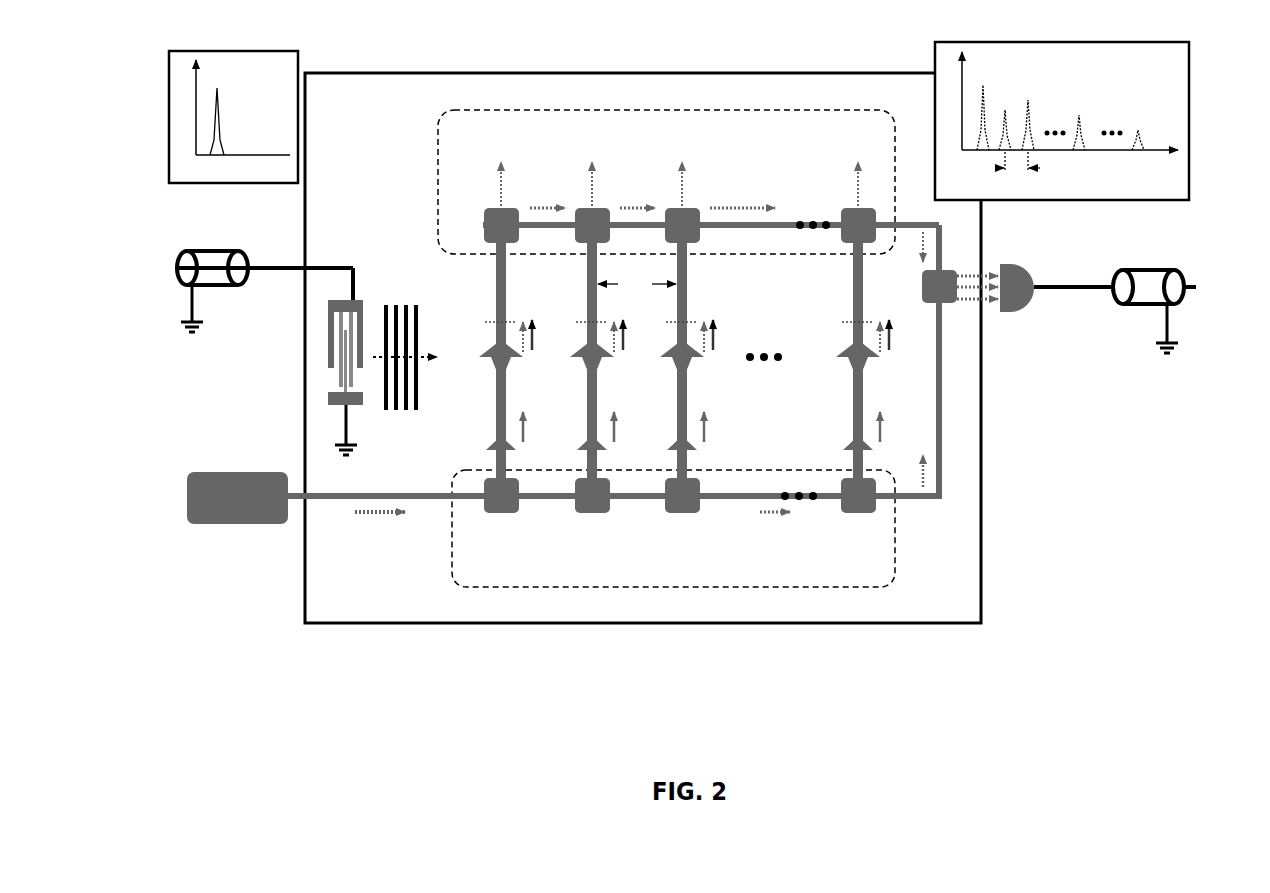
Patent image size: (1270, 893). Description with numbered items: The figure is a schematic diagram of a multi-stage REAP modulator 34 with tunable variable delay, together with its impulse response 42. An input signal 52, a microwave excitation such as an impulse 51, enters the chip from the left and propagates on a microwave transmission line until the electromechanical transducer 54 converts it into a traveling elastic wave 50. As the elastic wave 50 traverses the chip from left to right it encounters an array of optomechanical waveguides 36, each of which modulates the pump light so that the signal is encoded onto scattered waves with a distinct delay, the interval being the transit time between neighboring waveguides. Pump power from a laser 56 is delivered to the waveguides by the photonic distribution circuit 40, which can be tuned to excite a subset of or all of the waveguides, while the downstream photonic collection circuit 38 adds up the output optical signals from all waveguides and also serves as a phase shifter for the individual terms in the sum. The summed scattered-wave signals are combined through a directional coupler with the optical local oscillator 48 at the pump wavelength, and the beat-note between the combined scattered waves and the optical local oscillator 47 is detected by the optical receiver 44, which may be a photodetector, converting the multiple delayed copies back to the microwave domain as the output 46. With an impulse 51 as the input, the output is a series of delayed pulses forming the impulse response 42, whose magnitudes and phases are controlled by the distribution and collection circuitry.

The multi-stage REAP modulator 34 is at (375, 72).
The optomechanical waveguide 36 is at (858, 280).
The photonic collection circuit 38 is at (688, 182).
The photonic distribution circuit 40 is at (613, 528).
The impulse response 42 is at (1193, 108).
The optical receiver 44 is at (1018, 311).
The output 46 is at (1198, 288).
The optical local oscillator 47 is at (923, 362).
The optical local oscillator 48 is at (953, 307).
The elastic wave 50 is at (405, 399).
The impulse 51 is at (163, 125).
The input signal 52 is at (173, 273).
The electromechanical transducer 54 is at (327, 406).
The laser 56 is at (238, 527).